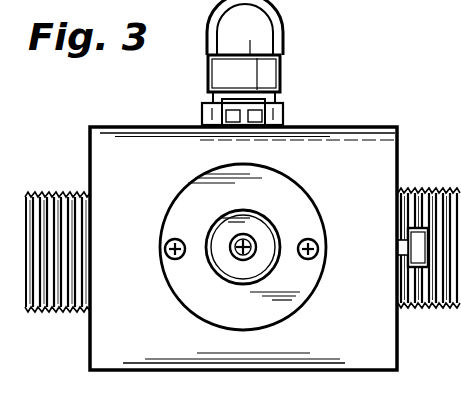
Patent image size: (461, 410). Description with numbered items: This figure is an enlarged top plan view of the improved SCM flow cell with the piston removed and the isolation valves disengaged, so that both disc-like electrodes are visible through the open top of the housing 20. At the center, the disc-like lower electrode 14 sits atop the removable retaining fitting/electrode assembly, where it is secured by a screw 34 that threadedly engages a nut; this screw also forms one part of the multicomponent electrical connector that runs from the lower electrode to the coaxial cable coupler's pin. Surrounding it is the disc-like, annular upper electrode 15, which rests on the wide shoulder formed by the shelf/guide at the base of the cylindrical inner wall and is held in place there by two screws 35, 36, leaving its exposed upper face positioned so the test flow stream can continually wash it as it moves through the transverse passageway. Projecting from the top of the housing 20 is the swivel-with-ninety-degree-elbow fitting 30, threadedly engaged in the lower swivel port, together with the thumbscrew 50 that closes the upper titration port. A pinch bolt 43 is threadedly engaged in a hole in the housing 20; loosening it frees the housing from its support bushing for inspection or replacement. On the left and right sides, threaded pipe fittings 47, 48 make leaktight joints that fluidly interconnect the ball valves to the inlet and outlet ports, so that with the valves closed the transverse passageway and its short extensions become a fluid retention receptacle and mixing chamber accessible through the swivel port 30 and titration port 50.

The lower electrode 14 is at (231, 268).
The upper electrode 15 is at (185, 292).
The housing 20 is at (370, 318).
The swivel-with-90 degree elbow fitting 30 is at (258, 42).
The screw 34 is at (255, 250).
The screw 35 is at (170, 240).
The screw 36 is at (314, 240).
The pinch bolt 43 is at (418, 248).
The threaded pipe fitting 47 is at (53, 290).
The threaded pipe fitting 48 is at (437, 308).
The thumbscrew 50 is at (262, 100).